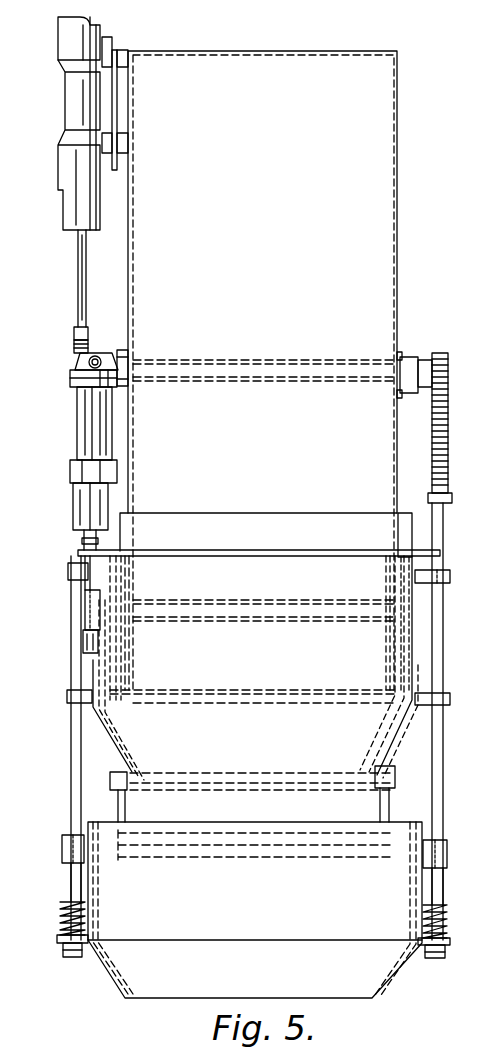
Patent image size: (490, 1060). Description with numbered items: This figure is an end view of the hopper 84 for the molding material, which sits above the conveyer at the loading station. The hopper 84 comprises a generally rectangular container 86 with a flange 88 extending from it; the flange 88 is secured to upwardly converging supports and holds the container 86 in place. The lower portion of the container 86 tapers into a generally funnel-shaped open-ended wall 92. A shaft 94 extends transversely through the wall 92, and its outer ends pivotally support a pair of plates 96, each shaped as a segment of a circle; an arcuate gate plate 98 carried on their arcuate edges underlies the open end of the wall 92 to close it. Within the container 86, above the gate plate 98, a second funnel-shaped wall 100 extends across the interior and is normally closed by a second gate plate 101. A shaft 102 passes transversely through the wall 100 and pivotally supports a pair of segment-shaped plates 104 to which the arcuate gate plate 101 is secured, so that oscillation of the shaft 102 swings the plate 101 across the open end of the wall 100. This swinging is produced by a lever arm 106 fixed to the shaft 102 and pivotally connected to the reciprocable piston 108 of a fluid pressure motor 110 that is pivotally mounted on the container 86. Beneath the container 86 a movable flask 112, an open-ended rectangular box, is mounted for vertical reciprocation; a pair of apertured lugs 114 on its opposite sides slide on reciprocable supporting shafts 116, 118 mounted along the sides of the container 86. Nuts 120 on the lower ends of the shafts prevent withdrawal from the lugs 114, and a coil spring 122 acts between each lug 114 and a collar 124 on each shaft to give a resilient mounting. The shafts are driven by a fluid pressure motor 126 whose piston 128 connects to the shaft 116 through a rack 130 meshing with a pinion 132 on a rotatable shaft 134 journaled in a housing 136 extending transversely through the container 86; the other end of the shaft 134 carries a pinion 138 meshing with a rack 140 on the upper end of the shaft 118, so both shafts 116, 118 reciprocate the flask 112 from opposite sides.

The hopper 84 is at (401, 163).
The container 86 is at (386, 126).
The flange 88 is at (408, 556).
The funnel-shaped open-ended wall 92 is at (171, 563).
The shaft 94 is at (392, 770).
The plates 96 is at (122, 806).
The arcuate gate plate 98 is at (324, 854).
The second funnel-shaped wall 100 is at (125, 657).
The second gate plate 101 is at (248, 692).
The shaft 102 is at (240, 606).
The plates 104 is at (122, 642).
The lever arm 106 is at (78, 637).
The reciprocable piston 108 is at (85, 583).
The fluid pressure motor 110 is at (80, 402).
The movable flask 112 is at (115, 868).
The apertured lugs 114 is at (62, 937).
The reciprocable supporting shaft 116 is at (76, 606).
The reciprocable supporting shaft 118 is at (440, 637).
The nuts 120 is at (62, 950).
The coil spring 122 is at (67, 916).
The collar 124 is at (68, 900).
The fluid pressure motor 126 is at (75, 103).
The piston 128 is at (80, 270).
The rack 130 is at (75, 330).
The pinion 132 is at (78, 346).
The rotatable shaft 134 is at (300, 368).
The housing 136 is at (206, 360).
The pinion 138 is at (440, 353).
The rack 140 is at (432, 447).